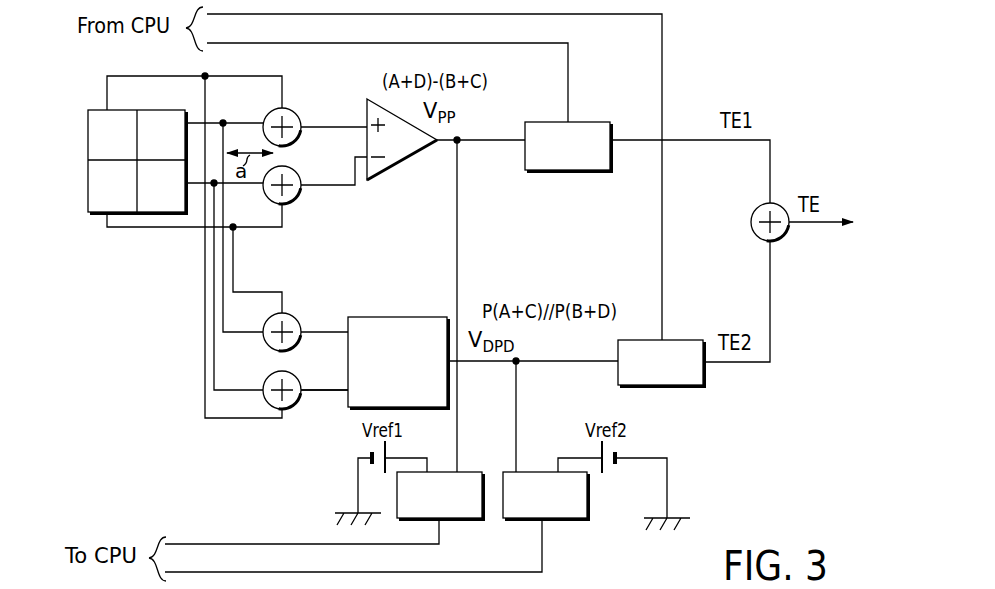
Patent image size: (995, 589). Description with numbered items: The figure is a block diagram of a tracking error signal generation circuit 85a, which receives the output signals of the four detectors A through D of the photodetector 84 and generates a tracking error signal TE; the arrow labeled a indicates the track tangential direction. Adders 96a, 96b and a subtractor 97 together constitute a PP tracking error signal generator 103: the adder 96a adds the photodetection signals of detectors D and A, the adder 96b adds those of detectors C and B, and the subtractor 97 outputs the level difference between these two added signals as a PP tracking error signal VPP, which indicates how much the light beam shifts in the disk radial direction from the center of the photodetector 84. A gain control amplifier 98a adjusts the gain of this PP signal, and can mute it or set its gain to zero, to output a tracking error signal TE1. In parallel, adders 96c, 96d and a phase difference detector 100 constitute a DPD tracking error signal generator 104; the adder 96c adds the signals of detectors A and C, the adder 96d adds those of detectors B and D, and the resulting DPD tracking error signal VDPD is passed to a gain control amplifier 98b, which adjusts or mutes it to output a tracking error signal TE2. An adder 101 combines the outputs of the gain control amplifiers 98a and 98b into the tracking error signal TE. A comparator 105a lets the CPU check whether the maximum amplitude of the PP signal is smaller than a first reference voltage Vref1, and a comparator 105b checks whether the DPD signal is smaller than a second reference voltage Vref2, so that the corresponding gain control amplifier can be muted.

The photodetector 84 is at (96, 224).
The adder 96a is at (296, 114).
The adder 96b is at (296, 199).
The adder 96c is at (320, 305).
The adder 96d is at (296, 405).
The subtractor 97 is at (398, 163).
The gain control amplifier 98a is at (595, 122).
The gain control amplifier 98b is at (680, 340).
The phase difference detector 100 is at (400, 317).
The adder 101 is at (782, 238).
The PP tracking error signal generator 103 is at (332, 168).
The DPD tracking error signal generator 104 is at (332, 373).
The comparator 105a is at (465, 518).
The comparator 105b is at (565, 518).
The tracking error signal generation circuit 85a is at (527, 226).